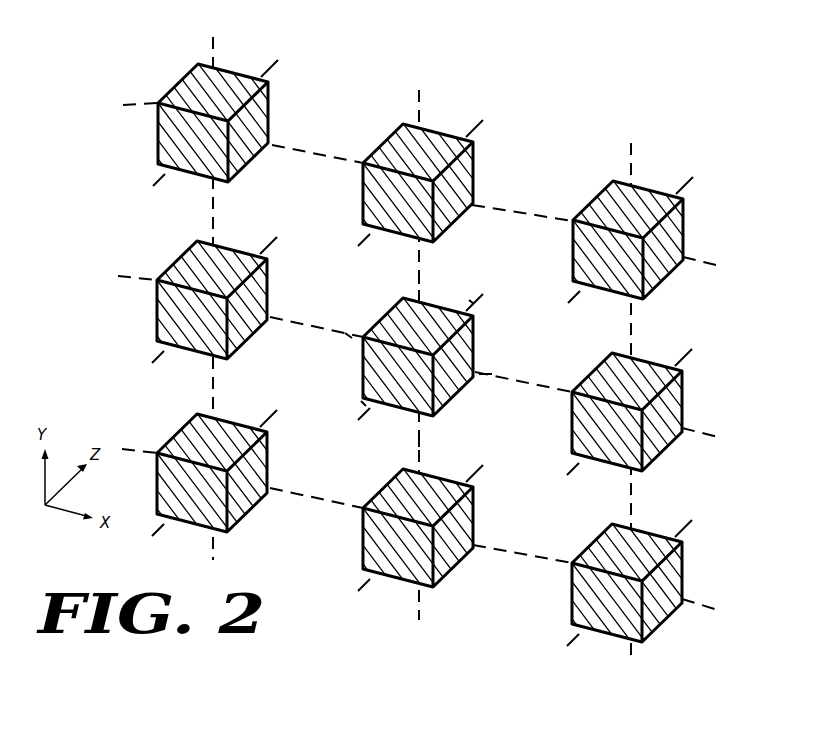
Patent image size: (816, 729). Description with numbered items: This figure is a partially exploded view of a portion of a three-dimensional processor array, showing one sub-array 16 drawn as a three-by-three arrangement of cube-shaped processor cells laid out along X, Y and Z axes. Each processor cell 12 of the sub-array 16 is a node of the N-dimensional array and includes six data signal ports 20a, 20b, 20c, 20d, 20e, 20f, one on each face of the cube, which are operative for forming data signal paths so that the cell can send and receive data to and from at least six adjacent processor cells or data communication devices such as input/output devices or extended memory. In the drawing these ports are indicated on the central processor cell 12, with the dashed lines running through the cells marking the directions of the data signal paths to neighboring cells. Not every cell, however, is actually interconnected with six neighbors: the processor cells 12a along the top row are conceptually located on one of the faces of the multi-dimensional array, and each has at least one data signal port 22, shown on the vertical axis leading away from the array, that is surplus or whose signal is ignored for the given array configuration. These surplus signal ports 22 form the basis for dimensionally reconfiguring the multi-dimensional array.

The sub-array 16 is at (142, 80).
The surplus data signal port 22 is at (212, 50).
The face processor cell 12a is at (234, 78).
The processor cell 12 is at (270, 275).
The data signal port 20a is at (418, 278).
The data signal port 20b is at (471, 302).
The data signal port 20c is at (486, 372).
The data signal port 20d is at (421, 440).
The data signal port 20e is at (366, 405).
The data signal port 20f is at (352, 338).